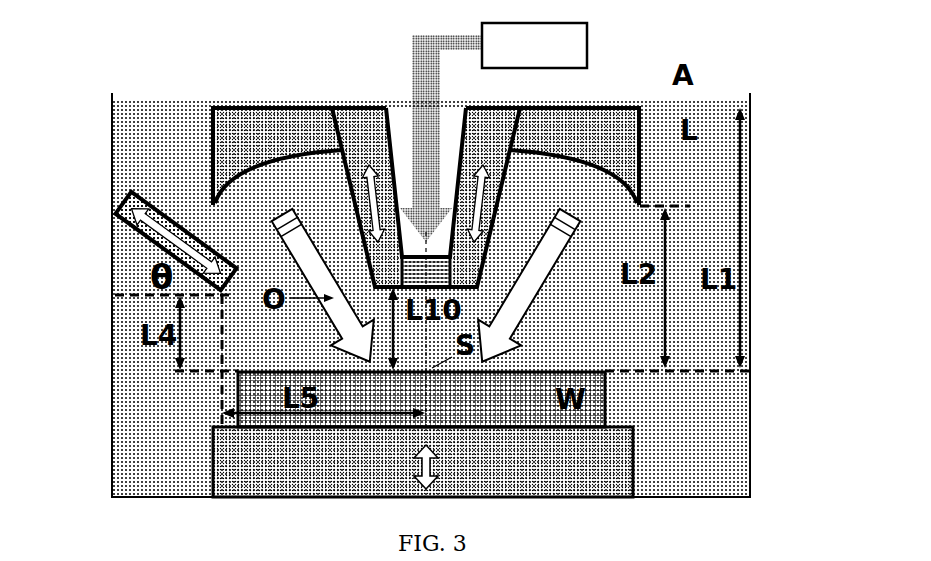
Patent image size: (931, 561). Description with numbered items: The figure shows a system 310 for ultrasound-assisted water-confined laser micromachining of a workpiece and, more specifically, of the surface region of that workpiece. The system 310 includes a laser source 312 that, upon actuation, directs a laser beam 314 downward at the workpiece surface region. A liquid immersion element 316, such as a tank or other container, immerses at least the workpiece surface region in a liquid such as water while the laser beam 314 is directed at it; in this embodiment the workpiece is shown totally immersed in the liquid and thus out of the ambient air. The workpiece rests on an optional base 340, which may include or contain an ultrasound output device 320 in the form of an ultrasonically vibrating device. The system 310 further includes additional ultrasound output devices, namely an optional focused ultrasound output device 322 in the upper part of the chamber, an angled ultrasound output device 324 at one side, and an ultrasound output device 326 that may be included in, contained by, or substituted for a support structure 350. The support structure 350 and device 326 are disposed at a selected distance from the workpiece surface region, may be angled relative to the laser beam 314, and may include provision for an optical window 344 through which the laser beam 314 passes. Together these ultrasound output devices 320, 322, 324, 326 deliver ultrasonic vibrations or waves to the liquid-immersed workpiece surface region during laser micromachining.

The system 310 is at (778, 307).
The laser source 312 is at (534, 45).
The laser beam 314 is at (410, 77).
The liquid immersion element 316 is at (100, 359).
The ultrasound output device 320 is at (402, 465).
The focused ultrasound output device 322 is at (451, 157).
The ultrasound output device 324 is at (133, 193).
The ultrasound output device 326 is at (377, 177).
The base 340 is at (423, 462).
The optical window 344 is at (440, 272).
The support structure 350 is at (427, 196).